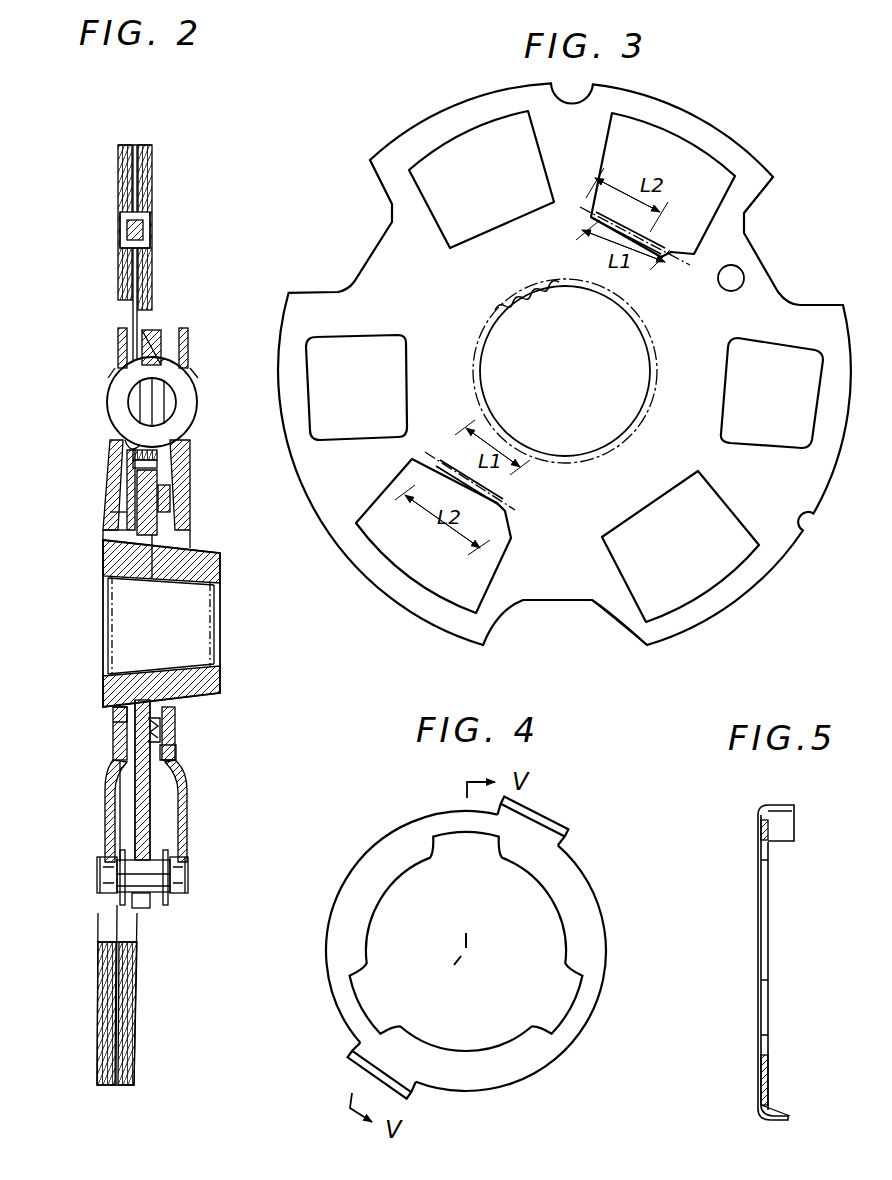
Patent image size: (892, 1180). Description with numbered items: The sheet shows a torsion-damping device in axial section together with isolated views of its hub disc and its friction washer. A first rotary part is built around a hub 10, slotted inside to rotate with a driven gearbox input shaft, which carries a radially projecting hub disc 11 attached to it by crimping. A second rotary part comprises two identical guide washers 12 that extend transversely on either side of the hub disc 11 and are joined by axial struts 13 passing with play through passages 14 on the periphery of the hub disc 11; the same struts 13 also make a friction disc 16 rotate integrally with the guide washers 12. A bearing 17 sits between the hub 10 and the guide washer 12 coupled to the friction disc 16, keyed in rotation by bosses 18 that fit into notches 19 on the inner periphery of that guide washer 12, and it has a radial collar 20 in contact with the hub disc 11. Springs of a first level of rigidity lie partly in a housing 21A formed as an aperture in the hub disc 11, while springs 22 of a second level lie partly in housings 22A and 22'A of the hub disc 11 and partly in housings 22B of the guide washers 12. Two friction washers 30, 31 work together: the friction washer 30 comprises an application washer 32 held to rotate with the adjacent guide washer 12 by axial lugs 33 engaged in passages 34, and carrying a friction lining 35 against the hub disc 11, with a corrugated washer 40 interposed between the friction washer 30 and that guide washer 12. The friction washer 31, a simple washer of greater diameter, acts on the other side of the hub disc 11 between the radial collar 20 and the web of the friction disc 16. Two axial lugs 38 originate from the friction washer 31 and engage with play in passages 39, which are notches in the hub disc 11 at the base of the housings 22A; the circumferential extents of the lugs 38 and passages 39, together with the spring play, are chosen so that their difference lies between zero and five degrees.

In FIG. 2, the hub 10 is at (222, 684).
In FIG. 2, the hub disc 11 is at (155, 328).
In FIG. 3, the hub disc 11 is at (728, 122).
In FIG. 2, the guide washers 12 is at (117, 335).
In FIG. 2, the axial struts 13 is at (160, 898).
In FIG. 2, the passages 14 is at (152, 848).
In FIG. 3, the passages 14 is at (372, 163).
In FIG. 2, the friction disc 16 is at (116, 158).
In FIG. 2, the bearing 17 is at (112, 714).
In FIG. 2, the bosses 18 is at (110, 528).
In FIG. 2, the notches 19 is at (118, 518).
In FIG. 2, the radial collar 20 is at (113, 758).
In FIG. 3, the housing 21A is at (363, 342).
In FIG. 2, the springs 22 is at (172, 402).
In FIG. 2, the housings 22A is at (165, 358).
In FIG. 3, the housings 22A is at (610, 148).
In FIG. 3, the housings 22'A is at (577, 366).
In FIG. 2, the housings 22B is at (115, 368).
In FIG. 2, the friction washer 30 is at (168, 470).
In FIG. 2, the friction washer 31 is at (133, 437).
In FIG. 4, the friction washer 31 is at (348, 850).
In FIG. 5, the friction washer 31 is at (758, 904).
In FIG. 2, the application washer 32 is at (152, 720).
In FIG. 2, the axial lugs 33 is at (175, 752).
In FIG. 2, the passages 34 is at (190, 768).
In FIG. 2, the friction lining 35 is at (150, 540).
In FIG. 2, the axial lugs 38 is at (150, 520).
In FIG. 3, the axial lugs 38 is at (656, 260).
In FIG. 4, the axial lugs 38 is at (567, 830).
In FIG. 5, the axial lugs 38 is at (783, 835).
In FIG. 2, the passages 39 is at (161, 455).
In FIG. 3, the passages 39 is at (595, 219).
In FIG. 2, the corrugated washer 40 is at (170, 495).